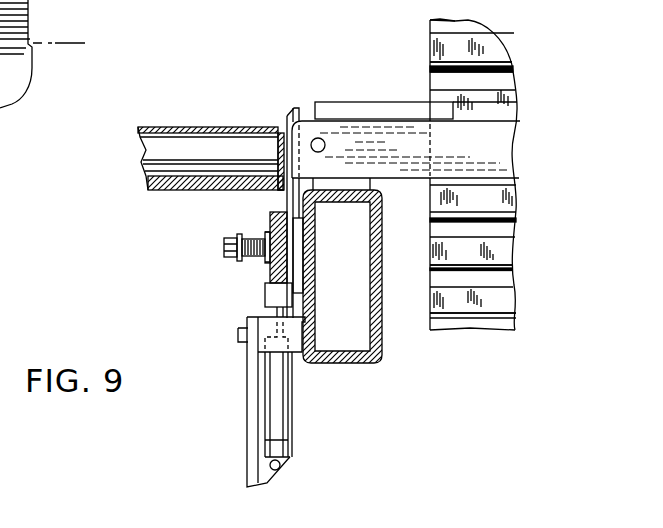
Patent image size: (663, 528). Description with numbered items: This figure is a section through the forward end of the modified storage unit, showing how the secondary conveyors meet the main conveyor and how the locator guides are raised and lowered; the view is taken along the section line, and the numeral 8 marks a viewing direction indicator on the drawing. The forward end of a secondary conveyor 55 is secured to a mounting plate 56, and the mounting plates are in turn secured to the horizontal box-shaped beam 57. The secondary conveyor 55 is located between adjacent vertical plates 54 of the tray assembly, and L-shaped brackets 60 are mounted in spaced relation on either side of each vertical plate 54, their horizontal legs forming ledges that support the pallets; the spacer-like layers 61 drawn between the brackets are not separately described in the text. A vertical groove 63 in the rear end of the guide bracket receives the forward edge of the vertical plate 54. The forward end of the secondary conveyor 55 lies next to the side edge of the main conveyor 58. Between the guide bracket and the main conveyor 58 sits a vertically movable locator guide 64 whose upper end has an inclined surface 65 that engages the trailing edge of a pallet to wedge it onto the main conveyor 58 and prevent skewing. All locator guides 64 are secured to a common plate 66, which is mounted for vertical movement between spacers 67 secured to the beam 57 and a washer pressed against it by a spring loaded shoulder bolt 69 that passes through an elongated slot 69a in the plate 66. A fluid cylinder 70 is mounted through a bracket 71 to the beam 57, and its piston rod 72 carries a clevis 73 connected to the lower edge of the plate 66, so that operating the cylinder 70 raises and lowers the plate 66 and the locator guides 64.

The section line indicator for FIG. 8 is at (74, 46).
The vertical plate 54 is at (434, 23).
The secondary conveyor 55 is at (497, 137).
The mounting plate 56 is at (370, 183).
The box-shaped beam 57 is at (370, 364).
The main conveyor 58 is at (227, 125).
The L-shaped bracket 60 is at (470, 45).
The spacer plate 61 is at (430, 63).
The vertical groove 63 is at (435, 112).
The locator guide 64 is at (282, 188).
The inclined surface 65 is at (295, 110).
The common plate 66 is at (288, 270).
The spacer 67 is at (299, 228).
The spring loaded shoulder bolt 69 is at (228, 238).
The elongated slot 69a is at (267, 268).
The fluid cylinder 70 is at (288, 412).
The bracket 71 is at (250, 415).
The piston rod 72 is at (260, 315).
The clevis 73 is at (270, 293).